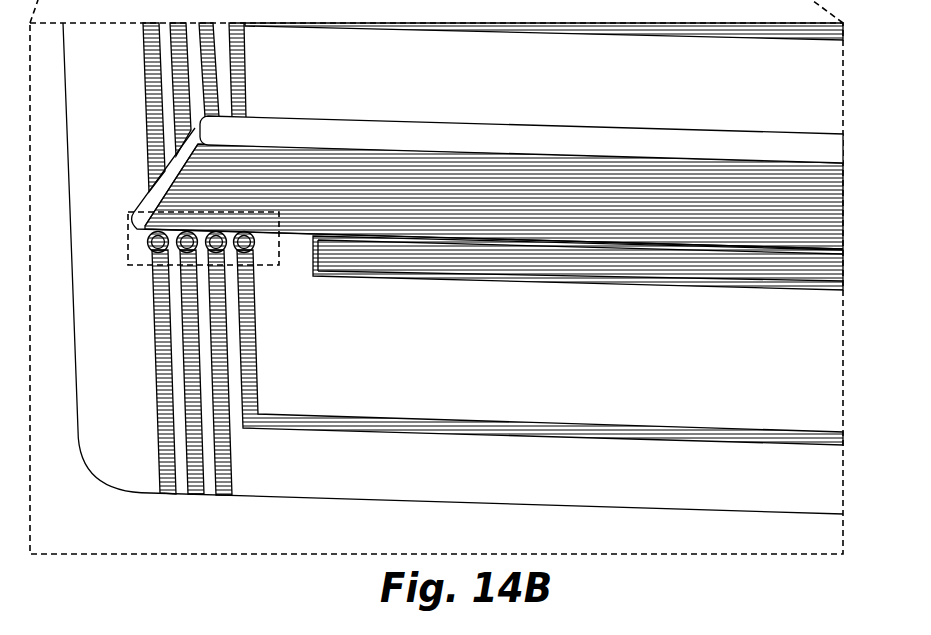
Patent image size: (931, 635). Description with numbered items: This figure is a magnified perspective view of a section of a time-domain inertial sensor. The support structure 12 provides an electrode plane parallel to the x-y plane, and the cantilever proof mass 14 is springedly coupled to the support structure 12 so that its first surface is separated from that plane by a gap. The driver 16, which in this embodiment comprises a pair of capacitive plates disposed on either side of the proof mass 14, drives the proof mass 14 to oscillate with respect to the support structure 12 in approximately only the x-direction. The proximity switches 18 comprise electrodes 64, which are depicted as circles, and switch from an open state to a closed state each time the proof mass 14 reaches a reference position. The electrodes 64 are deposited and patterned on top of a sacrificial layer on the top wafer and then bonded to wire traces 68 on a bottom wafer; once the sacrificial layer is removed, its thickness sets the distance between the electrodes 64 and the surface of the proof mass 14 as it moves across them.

The support structure 12 is at (655, 377).
The proof mass 14 is at (511, 125).
The driver 16 is at (432, 277).
The time-domain proximity switch 18 is at (265, 265).
The electrodes 64 is at (157, 265).
The wire traces 68 is at (231, 452).